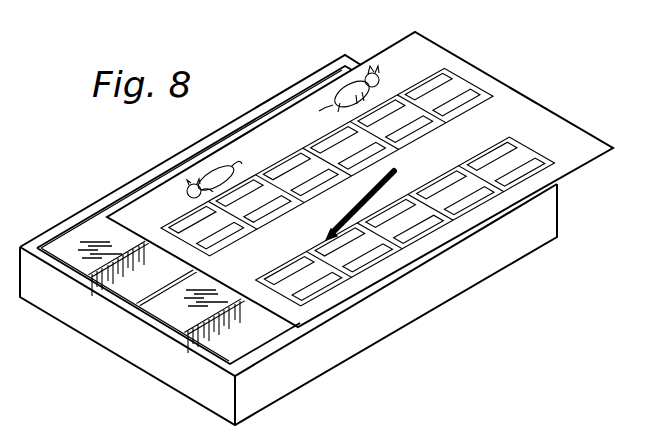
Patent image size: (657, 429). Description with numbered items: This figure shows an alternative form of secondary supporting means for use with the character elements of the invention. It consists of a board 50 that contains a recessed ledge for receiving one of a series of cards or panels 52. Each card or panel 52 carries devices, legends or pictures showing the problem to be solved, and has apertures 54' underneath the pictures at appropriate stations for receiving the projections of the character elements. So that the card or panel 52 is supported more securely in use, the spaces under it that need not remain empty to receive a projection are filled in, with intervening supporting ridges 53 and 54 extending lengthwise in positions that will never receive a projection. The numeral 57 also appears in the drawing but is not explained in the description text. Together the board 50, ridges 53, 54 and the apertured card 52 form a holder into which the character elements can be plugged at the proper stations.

The board 50 is at (308, 353).
The cards or panels 52 is at (516, 108).
The intervening supporting ridge 53 is at (114, 256).
The intervening supporting ridge 54 is at (175, 321).
The apertures 54' is at (452, 64).
The tray rim 57 is at (60, 250).